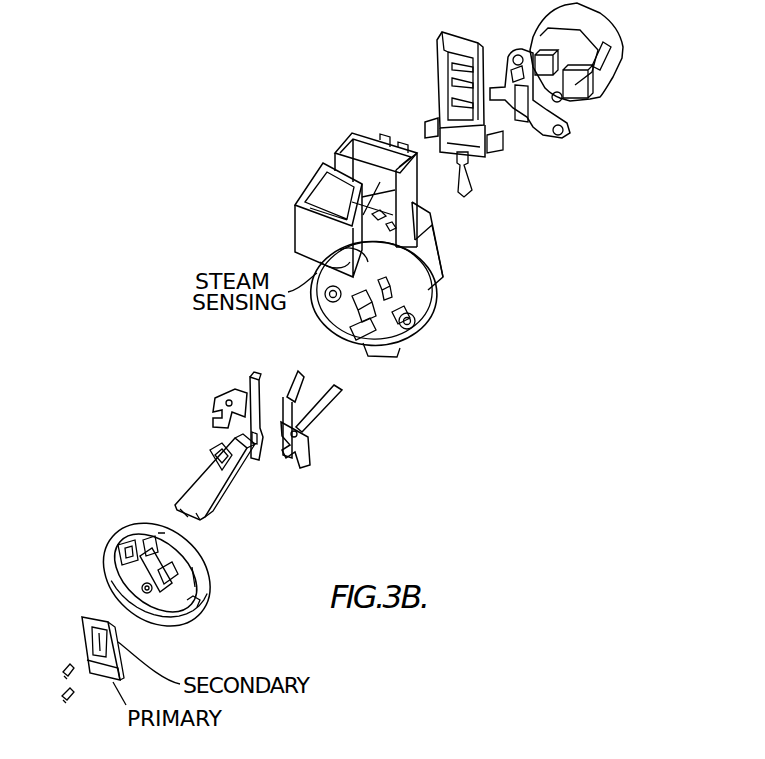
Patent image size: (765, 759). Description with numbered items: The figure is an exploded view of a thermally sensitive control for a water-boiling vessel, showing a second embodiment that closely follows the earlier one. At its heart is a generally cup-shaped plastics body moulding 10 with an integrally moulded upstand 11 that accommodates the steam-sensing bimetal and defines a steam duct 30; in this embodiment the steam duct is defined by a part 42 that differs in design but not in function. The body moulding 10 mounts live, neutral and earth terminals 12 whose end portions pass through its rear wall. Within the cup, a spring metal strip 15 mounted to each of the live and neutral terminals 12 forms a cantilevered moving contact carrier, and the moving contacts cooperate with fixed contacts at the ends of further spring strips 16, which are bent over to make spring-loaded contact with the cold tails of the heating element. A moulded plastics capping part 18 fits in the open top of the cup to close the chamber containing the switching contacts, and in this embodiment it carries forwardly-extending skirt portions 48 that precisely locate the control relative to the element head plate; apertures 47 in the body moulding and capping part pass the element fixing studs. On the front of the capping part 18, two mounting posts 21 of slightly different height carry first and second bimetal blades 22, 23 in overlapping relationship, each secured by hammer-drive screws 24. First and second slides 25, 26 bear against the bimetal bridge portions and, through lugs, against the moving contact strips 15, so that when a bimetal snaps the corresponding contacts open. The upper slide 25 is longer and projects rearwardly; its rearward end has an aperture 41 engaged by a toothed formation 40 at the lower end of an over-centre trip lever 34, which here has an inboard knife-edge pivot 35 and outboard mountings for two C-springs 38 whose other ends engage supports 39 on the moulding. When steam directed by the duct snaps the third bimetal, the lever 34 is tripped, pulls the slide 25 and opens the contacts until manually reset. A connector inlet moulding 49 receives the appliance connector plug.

The body moulding 10 is at (440, 302).
The upstand 11 is at (331, 145).
The terminals 12 is at (468, 178).
The spring metal strip 15 is at (250, 380).
The spring metal strips 16 is at (212, 418).
The moulded plastics part 18 is at (212, 588).
The mounting posts 21 is at (140, 577).
The first bimetal blade 22 is at (83, 620).
The second bimetal blade 23 is at (118, 677).
The hammer-drive screws 24 is at (67, 667).
The first slide 25 is at (198, 495).
The second slide 26 is at (235, 472).
The steam duct 30 is at (363, 157).
The trip lever 34 is at (443, 100).
The knife-edge pivot 35 is at (445, 68).
The C-spring 38 is at (538, 135).
The supports 39 is at (433, 217).
The toothed formation 40 is at (457, 163).
The aperture 41 is at (220, 458).
The steam duct part 42 is at (297, 232).
The apertures 47 is at (192, 605).
The skirt portions 48 is at (130, 528).
The connector inlet moulding 49 is at (610, 70).